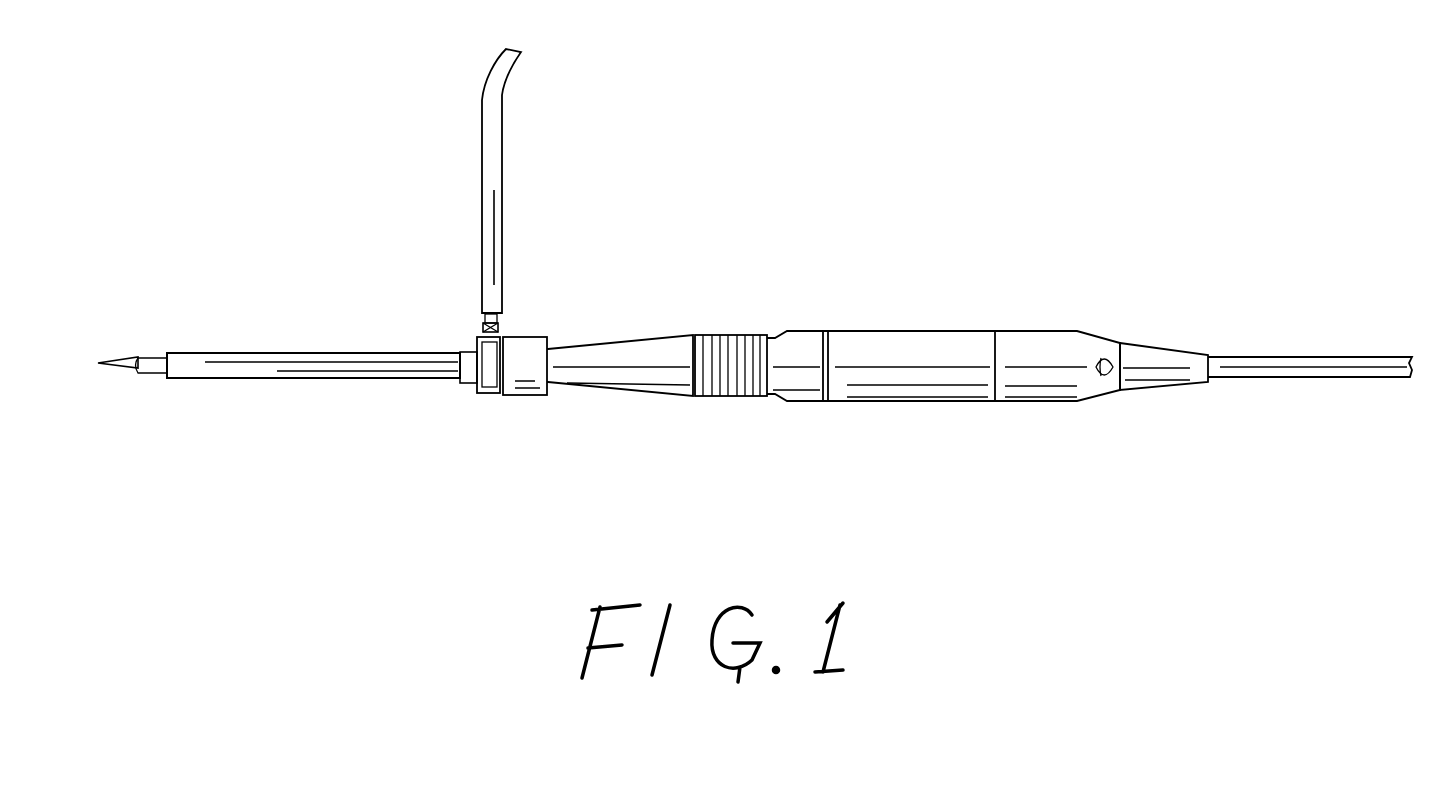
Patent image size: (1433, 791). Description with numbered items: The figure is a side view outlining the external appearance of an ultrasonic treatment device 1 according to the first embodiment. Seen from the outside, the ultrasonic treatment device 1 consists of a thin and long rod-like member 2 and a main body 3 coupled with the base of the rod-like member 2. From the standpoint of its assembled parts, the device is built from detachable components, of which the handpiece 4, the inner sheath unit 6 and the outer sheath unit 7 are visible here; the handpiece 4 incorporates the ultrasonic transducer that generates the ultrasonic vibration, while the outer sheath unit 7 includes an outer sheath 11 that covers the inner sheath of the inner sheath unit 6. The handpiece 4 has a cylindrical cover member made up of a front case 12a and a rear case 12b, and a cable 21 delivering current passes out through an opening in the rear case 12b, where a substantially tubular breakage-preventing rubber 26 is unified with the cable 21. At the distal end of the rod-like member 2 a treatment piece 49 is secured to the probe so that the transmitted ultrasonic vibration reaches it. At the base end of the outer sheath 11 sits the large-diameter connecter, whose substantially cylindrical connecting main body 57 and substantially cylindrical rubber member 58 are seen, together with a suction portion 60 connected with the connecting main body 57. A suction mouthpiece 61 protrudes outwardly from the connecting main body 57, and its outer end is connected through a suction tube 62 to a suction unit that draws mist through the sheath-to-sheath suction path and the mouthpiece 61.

The ultrasonic treatment device 1 is at (900, 163).
The rod-like member 2 is at (276, 407).
The main body 3 is at (826, 445).
The handpiece 4 is at (925, 328).
The inner sheath unit 6 is at (715, 415).
The outer sheath unit 7 is at (450, 392).
The outer sheath 11 is at (340, 381).
The front case 12a is at (942, 403).
The rear case 12b is at (1062, 403).
The cable 21 is at (1317, 355).
The breakage-preventing rubber 26 is at (1158, 348).
The treatment piece 49 is at (117, 368).
The connecting main body 57 is at (468, 380).
The rubber member 58 is at (533, 394).
The suction portion 60 is at (464, 309).
The suction mouthpiece 61 is at (503, 322).
The suction tube 62 is at (498, 172).